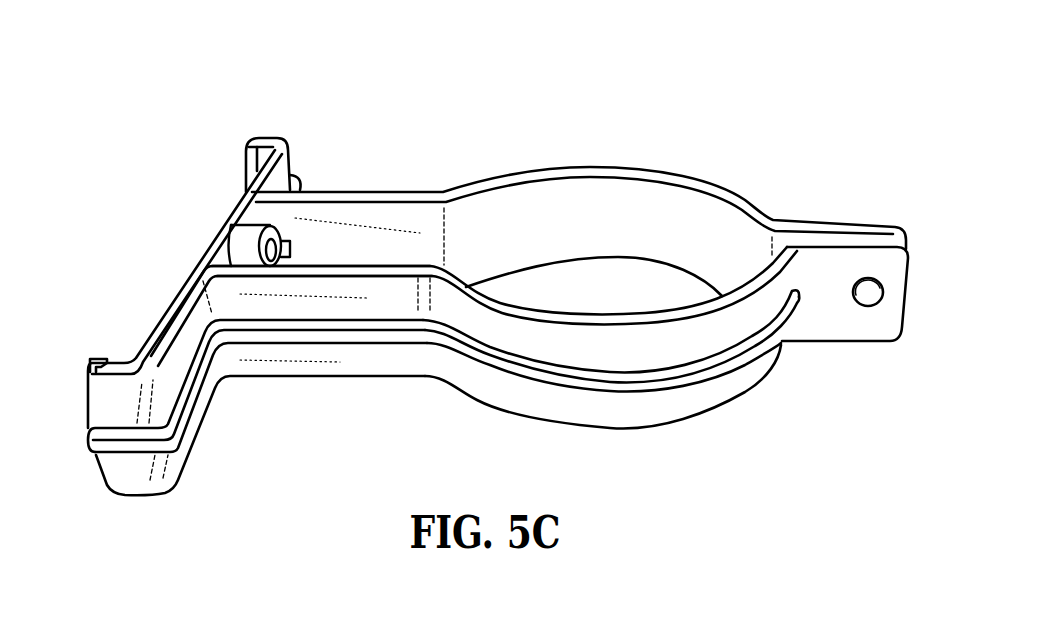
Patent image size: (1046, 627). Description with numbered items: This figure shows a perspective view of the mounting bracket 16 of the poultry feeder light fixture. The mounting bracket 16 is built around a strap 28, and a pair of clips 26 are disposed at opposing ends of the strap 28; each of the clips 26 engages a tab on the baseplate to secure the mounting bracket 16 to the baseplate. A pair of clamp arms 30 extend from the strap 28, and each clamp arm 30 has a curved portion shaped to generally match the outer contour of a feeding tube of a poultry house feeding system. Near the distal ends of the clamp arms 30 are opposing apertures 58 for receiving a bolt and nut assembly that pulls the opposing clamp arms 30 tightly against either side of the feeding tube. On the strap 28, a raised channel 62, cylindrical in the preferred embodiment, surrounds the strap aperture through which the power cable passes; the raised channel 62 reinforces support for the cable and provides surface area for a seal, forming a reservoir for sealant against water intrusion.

The mounting bracket 16 is at (660, 140).
The clips 26 is at (260, 137).
The strap 28 is at (178, 300).
The clamp arms 30 is at (540, 175).
The apertures 58 is at (868, 280).
The raised channel 62 is at (247, 235).